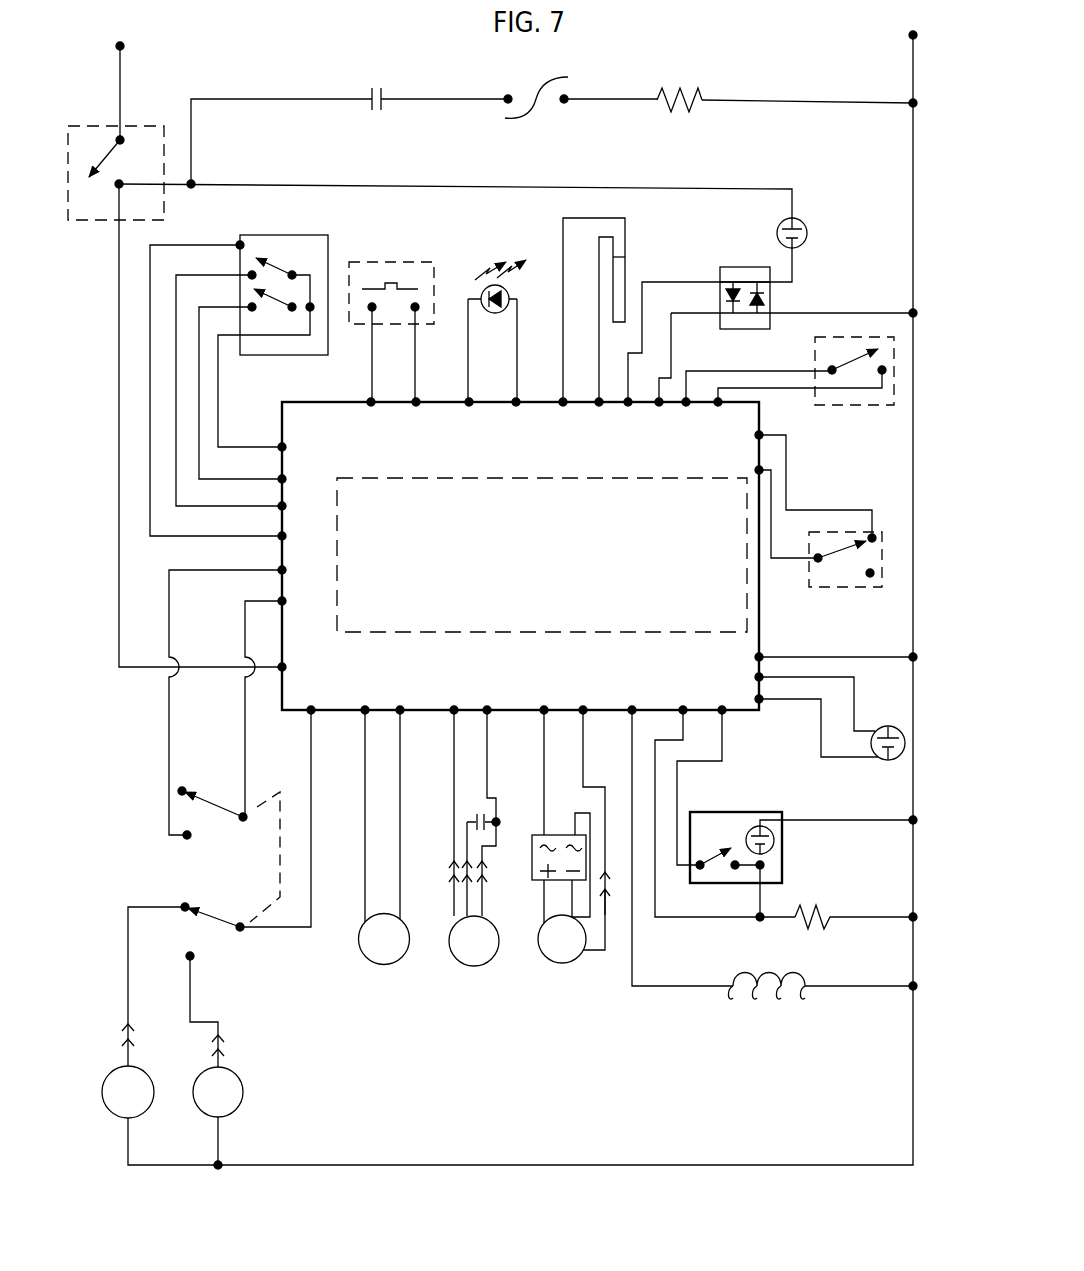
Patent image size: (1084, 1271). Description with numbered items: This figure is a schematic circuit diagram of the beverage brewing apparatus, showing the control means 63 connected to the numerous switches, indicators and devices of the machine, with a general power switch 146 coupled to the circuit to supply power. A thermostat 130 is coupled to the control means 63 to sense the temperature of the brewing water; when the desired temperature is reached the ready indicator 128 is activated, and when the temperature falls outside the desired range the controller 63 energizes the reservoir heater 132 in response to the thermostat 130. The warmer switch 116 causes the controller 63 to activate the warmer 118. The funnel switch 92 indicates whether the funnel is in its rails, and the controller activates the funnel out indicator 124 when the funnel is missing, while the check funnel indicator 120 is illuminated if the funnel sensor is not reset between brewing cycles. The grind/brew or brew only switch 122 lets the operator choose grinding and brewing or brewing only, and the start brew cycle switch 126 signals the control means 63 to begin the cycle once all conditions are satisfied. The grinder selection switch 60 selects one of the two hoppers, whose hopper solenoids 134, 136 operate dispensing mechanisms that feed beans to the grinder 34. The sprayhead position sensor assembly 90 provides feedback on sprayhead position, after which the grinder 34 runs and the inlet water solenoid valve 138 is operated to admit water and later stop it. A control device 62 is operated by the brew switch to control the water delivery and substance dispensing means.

The grinder 34 is at (568, 963).
The grinder selection switch 60 is at (155, 865).
The control device 62 is at (478, 966).
The control means 63 is at (774, 607).
The sprayhead position sensor assembly 90 is at (302, 235).
The funnel switch 92 is at (896, 358).
The warmer switch 116 is at (729, 805).
The warmer 118 is at (826, 916).
The check funnel indicator 120 is at (756, 258).
The grind/brew or brew only switch 122 is at (884, 560).
The funnel out indicator 124 is at (890, 716).
The start brew cycle switch 126 is at (411, 262).
The ready indicator 128 is at (480, 290).
The thermostat 130 is at (625, 232).
The reservoir heater 132 is at (682, 89).
The hopper solenoid 134 is at (118, 1116).
The hopper solenoid 136 is at (238, 1112).
The inlet water solenoid valve 138 is at (386, 965).
The general power switch 146 is at (93, 126).